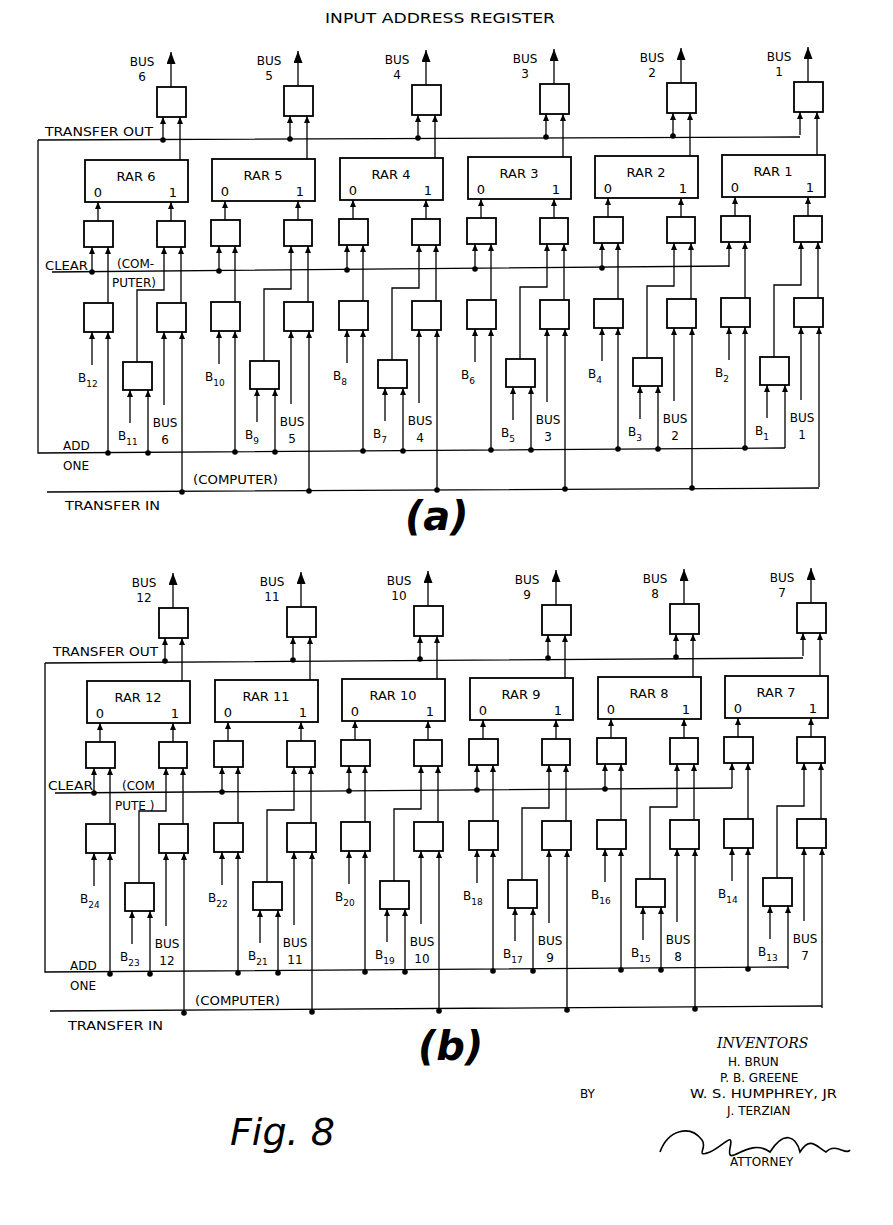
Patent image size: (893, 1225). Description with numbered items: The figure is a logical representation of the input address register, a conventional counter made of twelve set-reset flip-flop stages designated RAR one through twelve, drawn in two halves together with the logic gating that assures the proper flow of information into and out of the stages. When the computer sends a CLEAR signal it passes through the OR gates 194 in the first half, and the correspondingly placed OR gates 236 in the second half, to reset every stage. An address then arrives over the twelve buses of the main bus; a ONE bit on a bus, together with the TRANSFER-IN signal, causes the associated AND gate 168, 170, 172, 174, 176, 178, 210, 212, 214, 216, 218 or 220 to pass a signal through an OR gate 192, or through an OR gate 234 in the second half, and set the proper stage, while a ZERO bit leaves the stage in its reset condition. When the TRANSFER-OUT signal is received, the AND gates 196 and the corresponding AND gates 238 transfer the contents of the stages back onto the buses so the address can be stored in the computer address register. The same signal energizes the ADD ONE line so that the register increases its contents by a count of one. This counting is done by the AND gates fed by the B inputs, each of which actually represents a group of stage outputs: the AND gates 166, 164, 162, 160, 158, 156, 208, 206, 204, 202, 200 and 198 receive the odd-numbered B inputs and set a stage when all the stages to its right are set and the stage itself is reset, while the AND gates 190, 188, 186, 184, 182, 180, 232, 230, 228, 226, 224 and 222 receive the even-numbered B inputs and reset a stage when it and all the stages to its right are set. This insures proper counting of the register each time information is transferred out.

The AND gate 156 is at (144, 368).
The AND gate 158 is at (271, 367).
The AND gate 160 is at (399, 366).
The AND gate 162 is at (527, 365).
The AND gate 164 is at (654, 364).
The AND gate 166 is at (769, 359).
The AND gate 168 is at (184, 308).
The AND gate 170 is at (311, 307).
The AND gate 172 is at (439, 306).
The AND gate 174 is at (567, 305).
The AND gate 176 is at (694, 304).
The AND gate 178 is at (821, 303).
The AND gate 180 is at (87, 311).
The AND gate 182 is at (239, 305).
The AND gate 184 is at (367, 304).
The AND gate 186 is at (495, 303).
The AND gate 188 is at (622, 302).
The AND gate 190 is at (749, 301).
The OR gate 192 is at (489, 233).
The OR gate 194 is at (433, 225).
The AND gate 196 is at (490, 99).
The AND gate 198 is at (146, 888).
The AND gate 200 is at (274, 887).
The AND gate 202 is at (401, 886).
The AND gate (bit 17 / bus 9 add-one) 204 is at (529, 885).
The AND gate 206 is at (657, 884).
The AND gate 208 is at (772, 880).
The AND gate 210 is at (186, 829).
The AND gate 212 is at (314, 828).
The AND gate 214 is at (441, 827).
The AND gate 216 is at (569, 826).
The AND gate 218 is at (697, 825).
The AND gate 220 is at (824, 824).
The AND gate 222 is at (87, 832).
The AND gate 224 is at (242, 826).
The AND gate 226 is at (369, 825).
The AND gate 228 is at (497, 824).
The AND gate 230 is at (625, 823).
The AND gate 232 is at (752, 822).
The OR gate (RAR set-1 input) 234 is at (492, 754).
The OR gate (RAR set-0 input) 236 is at (436, 746).
The AND gate (transfer out to bus) 238 is at (492, 620).